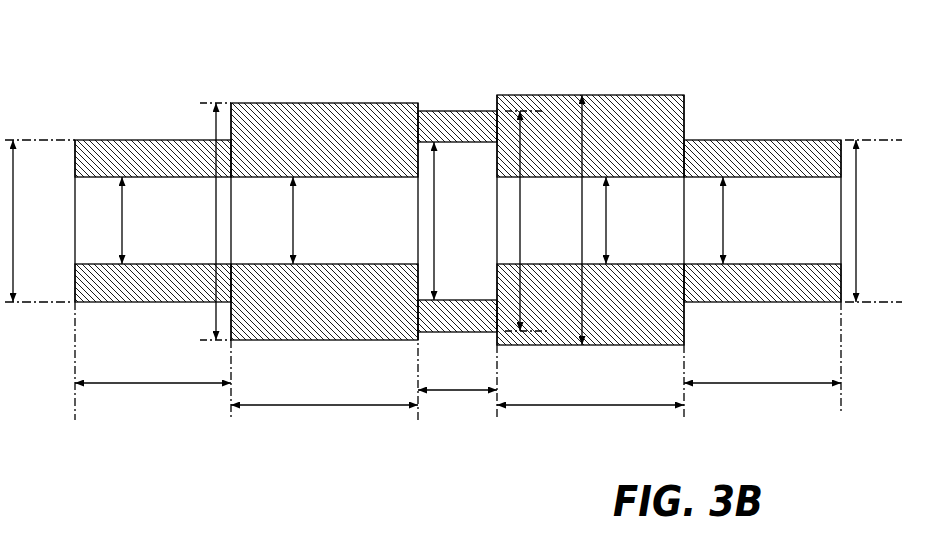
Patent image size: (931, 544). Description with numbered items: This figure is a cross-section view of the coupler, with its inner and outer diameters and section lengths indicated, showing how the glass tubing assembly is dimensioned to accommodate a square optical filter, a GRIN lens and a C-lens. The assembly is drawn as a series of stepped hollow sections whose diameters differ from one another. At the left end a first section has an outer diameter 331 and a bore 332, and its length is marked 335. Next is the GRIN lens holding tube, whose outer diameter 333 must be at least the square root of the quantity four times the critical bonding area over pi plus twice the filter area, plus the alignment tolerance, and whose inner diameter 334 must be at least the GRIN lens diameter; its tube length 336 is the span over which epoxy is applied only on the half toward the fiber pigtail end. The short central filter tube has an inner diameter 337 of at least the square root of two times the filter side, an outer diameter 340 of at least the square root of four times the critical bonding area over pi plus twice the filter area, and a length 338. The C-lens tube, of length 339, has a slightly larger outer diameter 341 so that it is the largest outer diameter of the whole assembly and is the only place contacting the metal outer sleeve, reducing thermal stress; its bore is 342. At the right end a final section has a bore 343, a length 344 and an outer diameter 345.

The first shaft section outer diameter 331 is at (13, 162).
The first section bore diameter 332 is at (123, 240).
The outer diameter 333 is at (216, 125).
The inner diameter 334 is at (293, 240).
The first section length 335 is at (153, 374).
The tube length 336 is at (324, 392).
The inner diameter 337 is at (435, 198).
The third section length 338 is at (457, 381).
The fourth section length 339 is at (590, 397).
The outer diameter 340 is at (525, 198).
The outer diameter 341 is at (583, 147).
The fourth section bore diameter 342 is at (606, 240).
The fifth section bore diameter 343 is at (723, 240).
The fifth section length 344 is at (762, 370).
The fifth shaft section outer diameter 345 is at (856, 233).